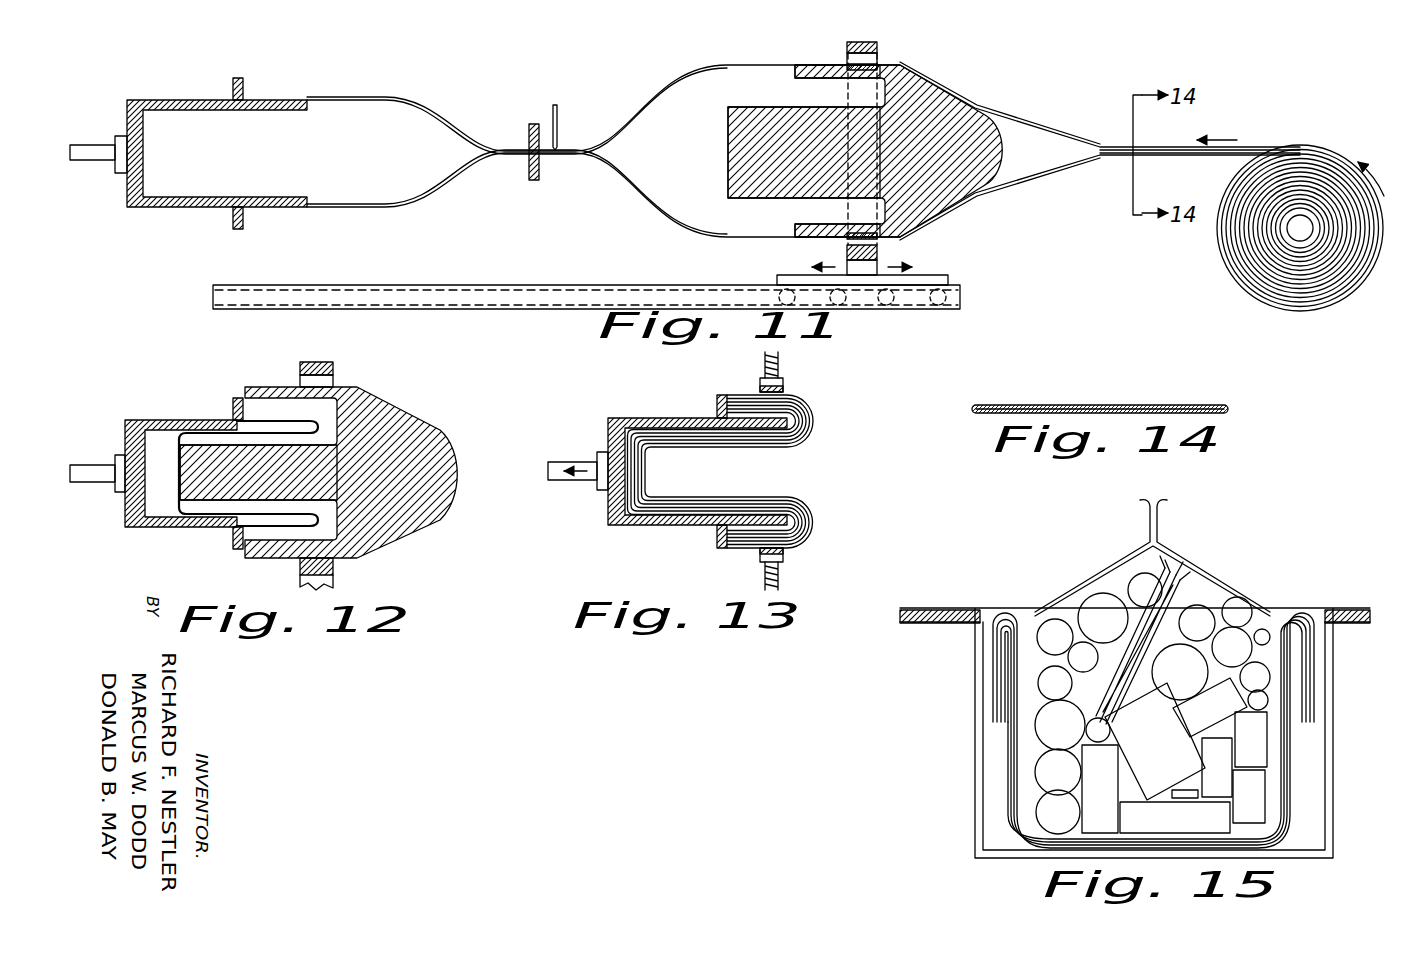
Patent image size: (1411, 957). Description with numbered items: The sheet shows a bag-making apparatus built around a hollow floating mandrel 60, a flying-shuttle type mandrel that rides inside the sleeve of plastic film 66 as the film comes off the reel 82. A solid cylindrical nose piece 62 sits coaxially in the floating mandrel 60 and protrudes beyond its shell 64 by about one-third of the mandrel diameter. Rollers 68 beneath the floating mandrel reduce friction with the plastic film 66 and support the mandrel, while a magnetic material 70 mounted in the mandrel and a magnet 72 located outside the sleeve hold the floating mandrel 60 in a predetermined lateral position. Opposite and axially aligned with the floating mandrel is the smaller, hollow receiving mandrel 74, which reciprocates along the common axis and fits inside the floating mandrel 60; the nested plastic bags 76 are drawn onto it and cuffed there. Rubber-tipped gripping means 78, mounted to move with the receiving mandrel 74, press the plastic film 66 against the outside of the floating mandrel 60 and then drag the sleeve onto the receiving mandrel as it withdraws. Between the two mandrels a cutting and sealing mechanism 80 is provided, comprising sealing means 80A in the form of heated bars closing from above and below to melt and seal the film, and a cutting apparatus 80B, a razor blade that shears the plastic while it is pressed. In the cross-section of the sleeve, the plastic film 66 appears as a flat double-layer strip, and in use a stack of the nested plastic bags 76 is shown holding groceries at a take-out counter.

In FIG. 11, the floating mandrel 60 is at (1000, 157).
In FIG. 12, the floating mandrel 60 is at (392, 408).
In FIG. 11, the nose piece 62 is at (728, 120).
In FIG. 12, the nose piece 62 is at (258, 472).
In FIG. 11, the shell 64 is at (816, 78).
In FIG. 11, the plastic film 66 is at (1040, 130).
In FIG. 12, the plastic film 66 is at (248, 473).
In FIG. 14, the plastic film 66 is at (1152, 404).
In FIG. 15, the plastic film 66 is at (1153, 674).
In FIG. 11, the rollers 68 is at (787, 289).
In FIG. 11, the magnetic material 70 is at (878, 66).
In FIG. 11, the magnet 72 is at (857, 42).
In FIG. 12, the magnet 72 is at (316, 362).
In FIG. 11, the receiving mandrel 74 is at (130, 208).
In FIG. 12, the receiving mandrel 74 is at (125, 430).
In FIG. 13, the receiving mandrel 74 is at (608, 432).
In FIG. 13, the plastic bags 76 is at (815, 428).
In FIG. 13, the gripping means 78 is at (785, 381).
In FIG. 11, the cutting and sealing mechanism 80 is at (552, 128).
In FIG. 11, the sealing means 80A is at (525, 125).
In FIG. 11, the cutting apparatus 80B is at (558, 128).
In FIG. 11, the reel 82 is at (1290, 234).